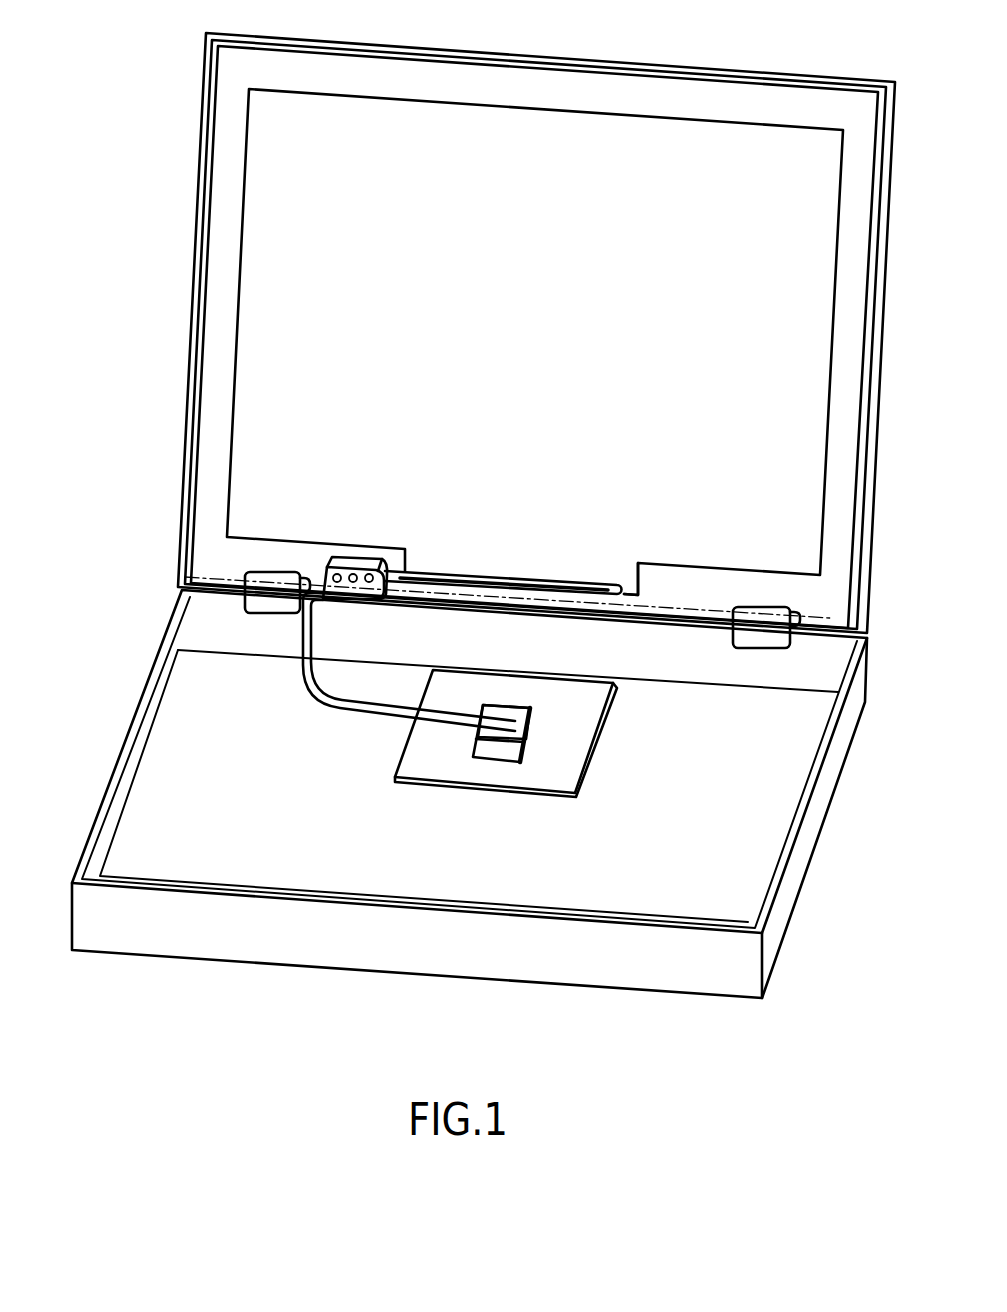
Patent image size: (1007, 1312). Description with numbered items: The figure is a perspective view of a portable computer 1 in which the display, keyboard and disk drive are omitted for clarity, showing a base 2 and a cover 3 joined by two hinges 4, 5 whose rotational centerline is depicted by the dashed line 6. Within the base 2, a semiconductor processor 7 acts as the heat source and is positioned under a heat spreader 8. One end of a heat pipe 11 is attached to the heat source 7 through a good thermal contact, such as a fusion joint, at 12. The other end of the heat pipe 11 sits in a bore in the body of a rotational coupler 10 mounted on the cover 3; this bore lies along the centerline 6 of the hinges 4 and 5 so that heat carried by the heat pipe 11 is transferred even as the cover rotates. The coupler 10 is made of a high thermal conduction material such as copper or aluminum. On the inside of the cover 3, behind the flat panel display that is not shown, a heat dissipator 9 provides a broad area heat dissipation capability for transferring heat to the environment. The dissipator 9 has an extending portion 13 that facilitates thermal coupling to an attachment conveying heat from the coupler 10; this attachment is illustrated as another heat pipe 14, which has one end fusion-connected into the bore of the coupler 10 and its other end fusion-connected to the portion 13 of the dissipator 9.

The portable computer 1 is at (132, 338).
The base 2 is at (263, 942).
The cover 3 is at (180, 478).
The hinge 4 is at (258, 598).
The hinge 5 is at (778, 635).
The centerline of the hinges 6 is at (817, 617).
The semiconductor processor 7 is at (523, 747).
The heat spreader 8 is at (517, 718).
The heat dissipator 9 is at (255, 205).
The rotational coupler 10 is at (352, 566).
The heat pipe 11 is at (296, 675).
The thermal contact 12 is at (495, 712).
The portion of the dissipator 13 is at (642, 592).
The heat pipe 14 is at (477, 580).